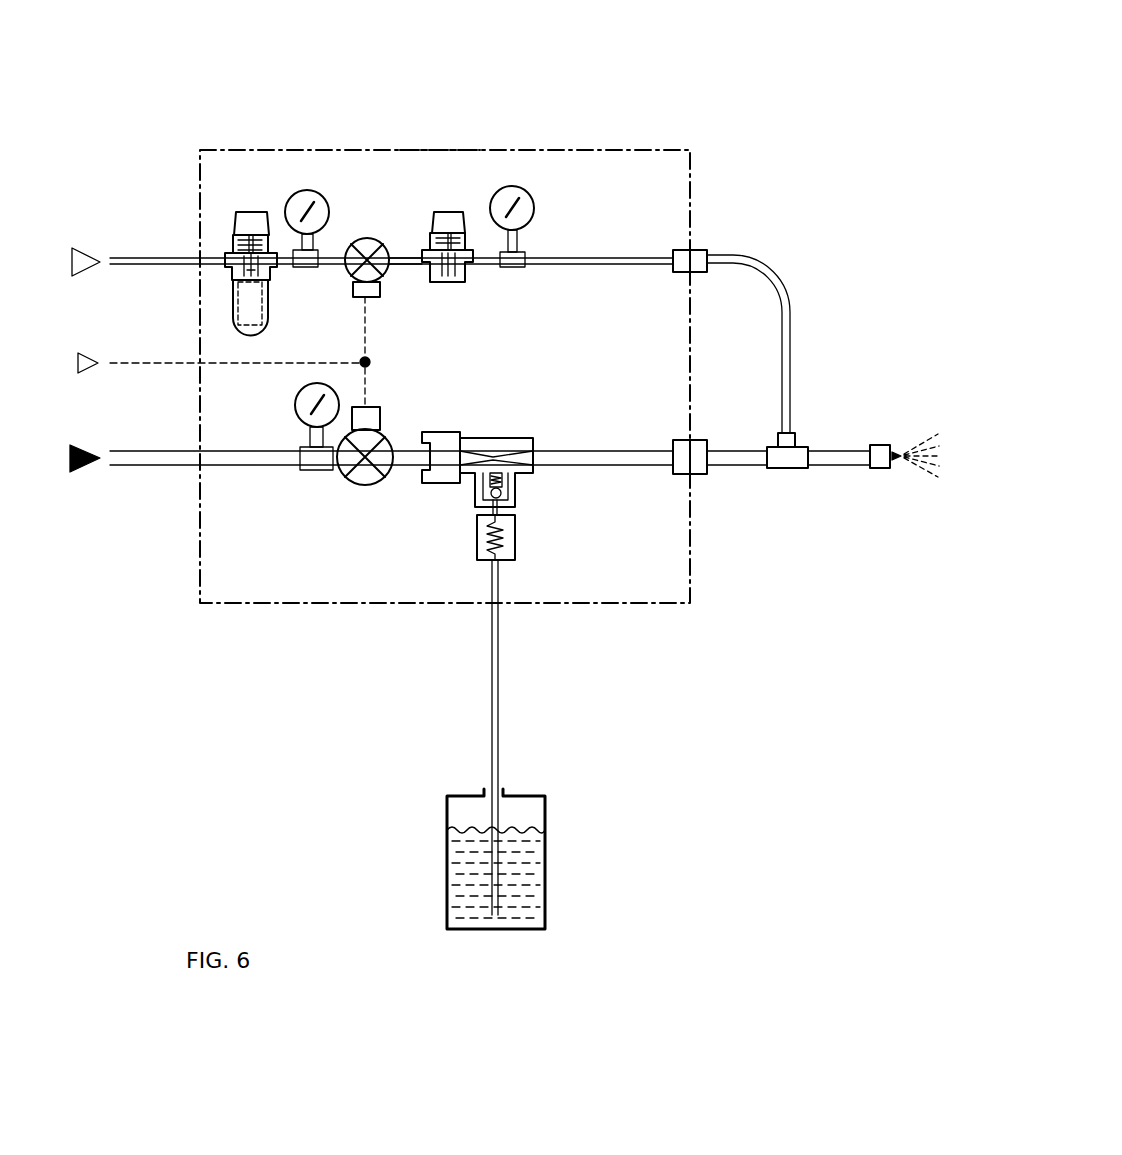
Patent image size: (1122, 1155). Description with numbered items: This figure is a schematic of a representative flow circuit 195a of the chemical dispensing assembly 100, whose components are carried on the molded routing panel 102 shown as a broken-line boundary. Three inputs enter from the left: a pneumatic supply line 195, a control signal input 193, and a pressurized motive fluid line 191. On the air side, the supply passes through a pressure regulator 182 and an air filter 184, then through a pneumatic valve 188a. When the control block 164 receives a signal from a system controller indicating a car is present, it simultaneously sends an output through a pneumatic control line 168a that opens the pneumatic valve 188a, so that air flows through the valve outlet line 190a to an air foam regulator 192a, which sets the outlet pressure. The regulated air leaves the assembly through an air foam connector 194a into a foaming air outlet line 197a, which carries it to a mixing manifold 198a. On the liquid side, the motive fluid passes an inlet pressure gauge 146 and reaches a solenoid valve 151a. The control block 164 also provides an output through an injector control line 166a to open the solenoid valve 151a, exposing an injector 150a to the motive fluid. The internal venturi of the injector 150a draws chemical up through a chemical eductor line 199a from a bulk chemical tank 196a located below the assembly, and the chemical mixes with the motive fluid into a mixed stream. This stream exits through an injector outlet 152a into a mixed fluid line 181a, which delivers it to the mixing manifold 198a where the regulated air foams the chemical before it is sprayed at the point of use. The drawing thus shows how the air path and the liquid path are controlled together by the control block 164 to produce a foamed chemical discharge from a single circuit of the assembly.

The flow circuit 195a is at (652, 58).
The chemical dispensing assembly 100 is at (692, 166).
The molded routing panel 102 is at (428, 166).
The pneumatic supply line 195 is at (130, 268).
The control signal input 193 is at (128, 368).
The pressurized motive fluid line 191 is at (130, 472).
The pressure regulator 182 is at (211, 221).
The air filter 184 is at (235, 322).
The pneumatic valve 188a is at (366, 240).
The valve outlet line 190a is at (400, 256).
The air foam regulator 192a is at (450, 212).
The air foam connector 194a is at (684, 250).
The foaming air outlet line 197a is at (740, 256).
The mixing manifold 198a is at (798, 445).
The mixed fluid line 181a is at (745, 468).
The injector outlet 152a is at (680, 474).
The inlet pressure gauge 146 is at (294, 403).
The control block 164 is at (372, 362).
The pneumatic control line 168a is at (368, 332).
The injector control line 166a is at (371, 394).
The solenoid valve 151a is at (384, 432).
The injector 150a is at (480, 438).
The chemical eductor line 199a is at (500, 710).
The bulk chemical tank 196a is at (546, 890).